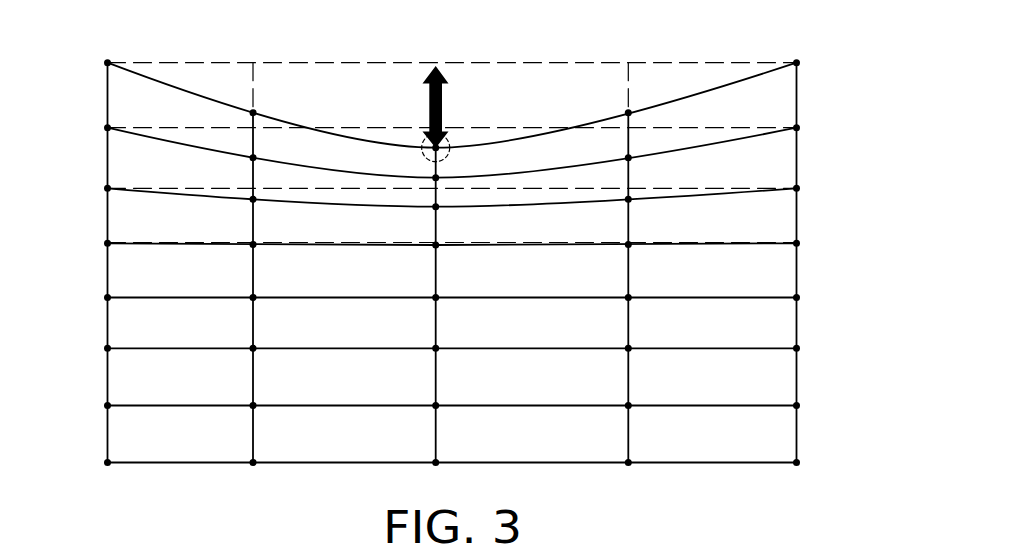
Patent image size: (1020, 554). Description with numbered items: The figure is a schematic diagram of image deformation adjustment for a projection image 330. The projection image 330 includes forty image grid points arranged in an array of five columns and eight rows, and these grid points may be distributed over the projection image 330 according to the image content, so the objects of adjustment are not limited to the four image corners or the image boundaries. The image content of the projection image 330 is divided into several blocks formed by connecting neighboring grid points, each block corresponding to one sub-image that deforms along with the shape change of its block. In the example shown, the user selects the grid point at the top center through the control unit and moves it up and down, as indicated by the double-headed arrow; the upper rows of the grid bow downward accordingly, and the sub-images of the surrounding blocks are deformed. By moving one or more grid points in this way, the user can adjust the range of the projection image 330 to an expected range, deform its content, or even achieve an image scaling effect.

The projection image 330 is at (684, 37).